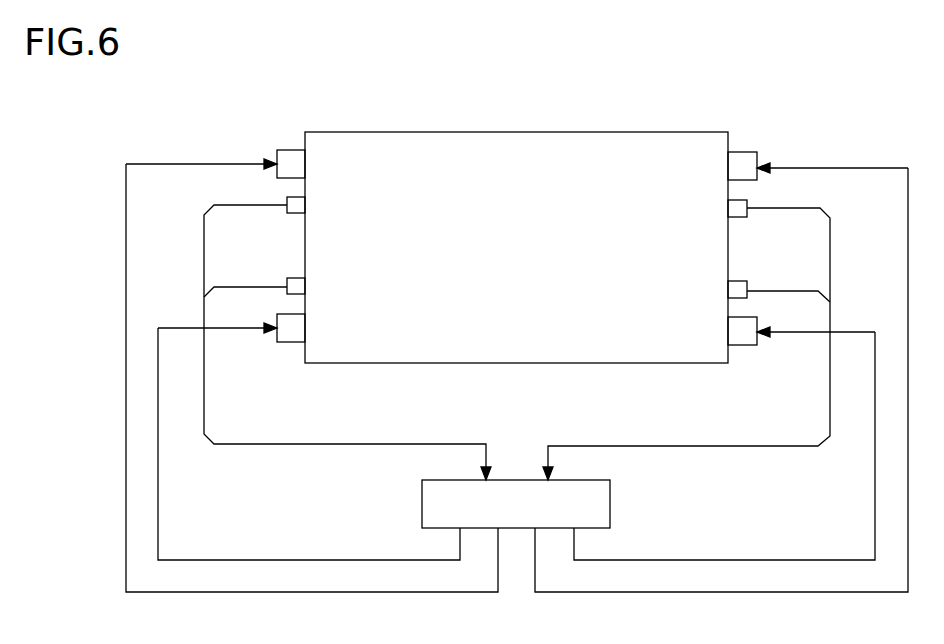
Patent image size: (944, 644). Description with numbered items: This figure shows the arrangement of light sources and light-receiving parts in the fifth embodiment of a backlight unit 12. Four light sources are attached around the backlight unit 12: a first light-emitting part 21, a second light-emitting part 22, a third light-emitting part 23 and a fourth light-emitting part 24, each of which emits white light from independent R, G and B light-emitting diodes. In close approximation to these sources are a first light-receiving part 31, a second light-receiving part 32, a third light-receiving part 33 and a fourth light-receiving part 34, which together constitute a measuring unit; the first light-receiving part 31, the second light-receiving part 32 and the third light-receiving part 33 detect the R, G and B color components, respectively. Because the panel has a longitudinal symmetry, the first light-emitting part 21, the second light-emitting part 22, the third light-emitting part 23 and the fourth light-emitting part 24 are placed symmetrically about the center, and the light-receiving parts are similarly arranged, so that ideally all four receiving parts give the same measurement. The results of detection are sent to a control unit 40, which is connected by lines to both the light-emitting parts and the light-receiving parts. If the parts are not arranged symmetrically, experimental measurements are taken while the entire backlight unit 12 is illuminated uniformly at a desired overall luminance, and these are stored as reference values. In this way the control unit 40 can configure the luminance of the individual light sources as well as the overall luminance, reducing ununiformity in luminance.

The backlight unit 12 is at (517, 132).
The first light-emitting part 21 is at (290, 150).
The second light-emitting part 22 is at (290, 342).
The third light-emitting part 23 is at (745, 152).
The fourth light-emitting part 24 is at (745, 345).
The first light-receiving part 31 is at (287, 211).
The second light-receiving part 32 is at (287, 280).
The third light-receiving part 33 is at (747, 215).
The fourth light-receiving part 34 is at (747, 283).
The control unit 40 is at (610, 503).